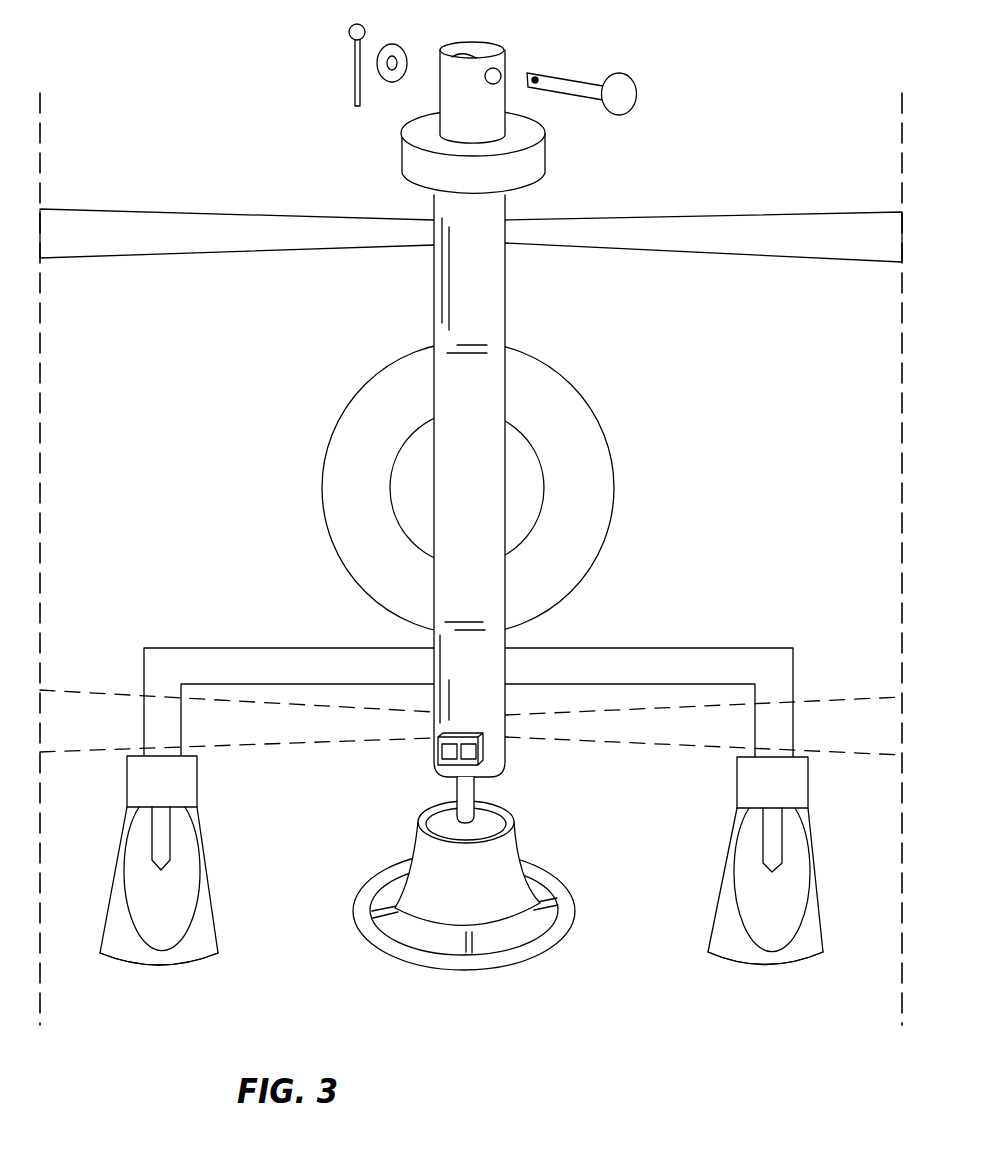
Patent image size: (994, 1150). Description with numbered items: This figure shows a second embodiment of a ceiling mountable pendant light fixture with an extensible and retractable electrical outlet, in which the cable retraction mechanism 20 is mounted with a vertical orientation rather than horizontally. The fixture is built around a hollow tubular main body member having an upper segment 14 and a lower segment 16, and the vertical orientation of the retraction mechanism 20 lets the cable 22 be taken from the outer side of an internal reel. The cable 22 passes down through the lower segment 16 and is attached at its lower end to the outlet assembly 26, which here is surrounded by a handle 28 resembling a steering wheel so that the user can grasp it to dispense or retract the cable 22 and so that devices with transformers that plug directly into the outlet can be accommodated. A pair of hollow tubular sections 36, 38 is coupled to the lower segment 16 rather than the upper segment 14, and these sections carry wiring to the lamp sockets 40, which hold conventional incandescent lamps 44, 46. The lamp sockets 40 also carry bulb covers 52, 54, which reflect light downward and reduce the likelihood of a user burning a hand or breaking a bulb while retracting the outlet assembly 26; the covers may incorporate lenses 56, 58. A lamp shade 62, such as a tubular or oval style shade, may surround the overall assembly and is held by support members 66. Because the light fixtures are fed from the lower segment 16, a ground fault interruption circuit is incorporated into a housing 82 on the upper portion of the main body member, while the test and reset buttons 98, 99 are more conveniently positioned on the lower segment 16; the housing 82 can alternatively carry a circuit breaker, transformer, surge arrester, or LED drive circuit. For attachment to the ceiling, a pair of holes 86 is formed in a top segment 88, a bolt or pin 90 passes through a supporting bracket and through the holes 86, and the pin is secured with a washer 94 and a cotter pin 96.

The upper segment 14 is at (502, 315).
The lower segment 16 is at (492, 634).
The cable retraction mechanism 20 is at (570, 547).
The cable 22 is at (450, 795).
The outlet assembly 26 is at (517, 847).
The handle 28 is at (453, 970).
The tubular section 36 is at (183, 656).
The tubular section 38 is at (662, 649).
The lamp socket 40 is at (198, 778).
The incandescent lamp 44 is at (187, 933).
The incandescent lamp 46 is at (805, 907).
The bulb cover 52 is at (110, 877).
The bulb cover 54 is at (727, 857).
The lens 56 is at (192, 967).
The lens 58 is at (737, 967).
The lamp shade 62 is at (40, 517).
The support members 66 is at (72, 209).
The housing 82 is at (523, 177).
The holes 86 is at (498, 55).
The top segment 88 is at (448, 88).
The bolt or pin 90 is at (582, 100).
The washer 94 is at (403, 50).
The cotter pin 96 is at (355, 58).
The test button 98 is at (445, 753).
The reset button 99 is at (470, 762).